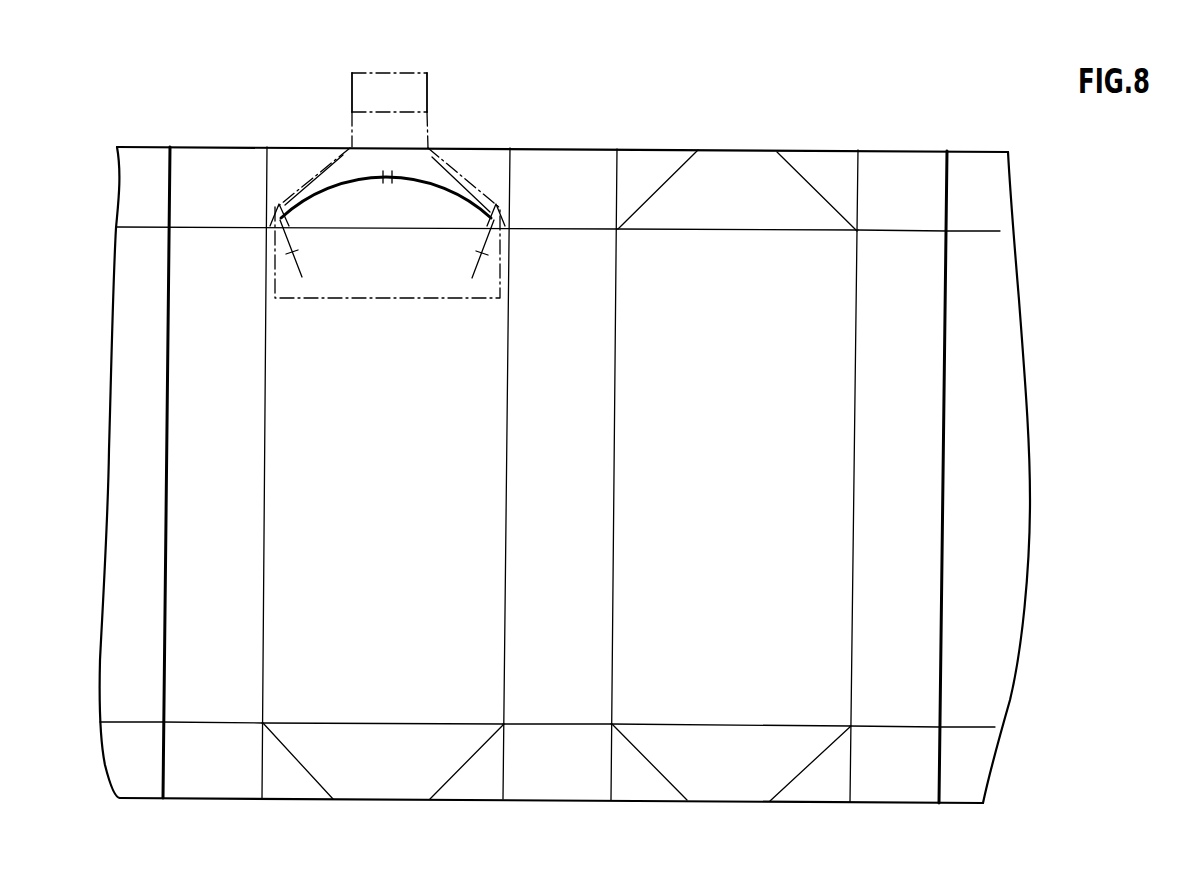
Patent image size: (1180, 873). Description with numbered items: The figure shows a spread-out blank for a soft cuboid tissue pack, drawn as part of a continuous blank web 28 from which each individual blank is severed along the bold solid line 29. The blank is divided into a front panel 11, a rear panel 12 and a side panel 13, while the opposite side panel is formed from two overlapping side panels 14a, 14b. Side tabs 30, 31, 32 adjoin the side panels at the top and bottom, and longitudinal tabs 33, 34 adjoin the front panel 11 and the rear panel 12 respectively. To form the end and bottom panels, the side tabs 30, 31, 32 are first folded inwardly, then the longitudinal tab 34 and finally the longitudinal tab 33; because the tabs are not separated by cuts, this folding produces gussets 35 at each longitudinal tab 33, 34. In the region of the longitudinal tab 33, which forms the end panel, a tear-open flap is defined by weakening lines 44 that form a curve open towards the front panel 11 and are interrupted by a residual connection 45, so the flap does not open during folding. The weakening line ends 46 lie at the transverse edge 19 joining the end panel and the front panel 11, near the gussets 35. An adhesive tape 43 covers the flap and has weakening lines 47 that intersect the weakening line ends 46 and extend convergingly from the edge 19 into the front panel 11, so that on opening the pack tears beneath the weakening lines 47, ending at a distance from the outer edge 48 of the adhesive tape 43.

The continuous blank web 28 is at (1066, 467).
The bold solid line 29 is at (162, 804).
The front panel 11 is at (382, 494).
The rear panel 12 is at (738, 494).
The side panel 13 is at (561, 494).
The overlapping side panel 14a is at (914, 494).
The overlapping side panel 14b is at (230, 494).
The side tab 30 is at (561, 774).
The side tab 31 is at (216, 774).
The side tab 32 is at (903, 774).
The longitudinal tab 33 is at (388, 774).
The longitudinal tab 34 is at (733, 774).
The gusset 35 is at (277, 207).
The transverse edge 19 is at (398, 228).
The adhesive tape 43 is at (347, 147).
The weakening lines 44 is at (288, 167).
The residual connection 45 is at (387, 172).
The weakening line ends 46 is at (195, 167).
The weakening lines 47 is at (283, 222).
The outer edge 48 is at (323, 300).